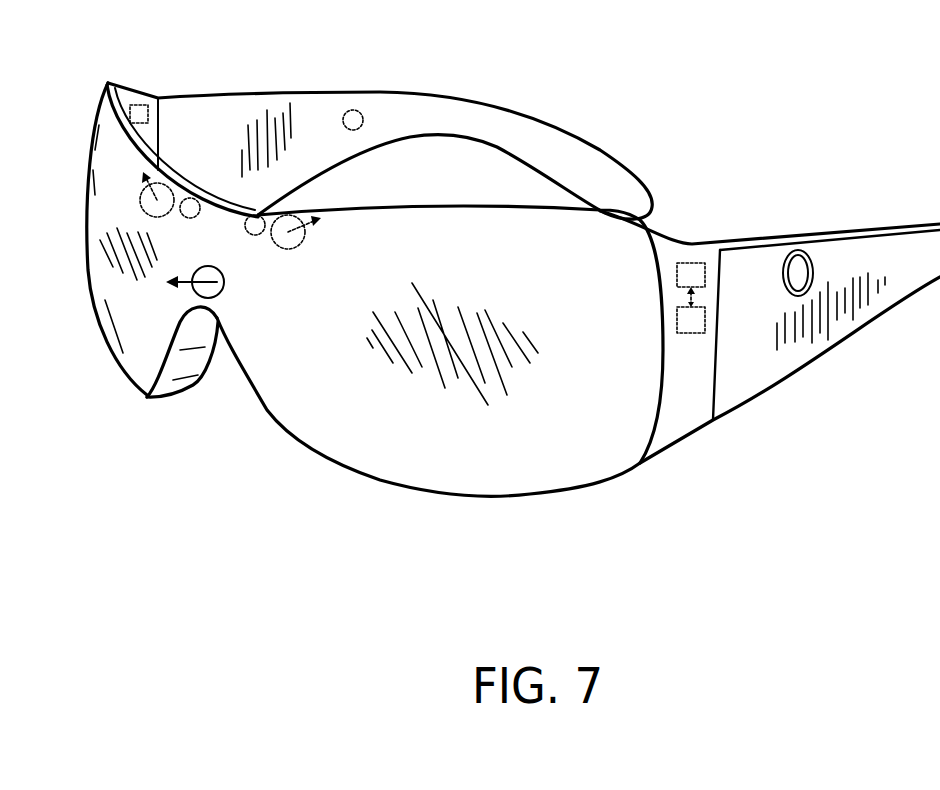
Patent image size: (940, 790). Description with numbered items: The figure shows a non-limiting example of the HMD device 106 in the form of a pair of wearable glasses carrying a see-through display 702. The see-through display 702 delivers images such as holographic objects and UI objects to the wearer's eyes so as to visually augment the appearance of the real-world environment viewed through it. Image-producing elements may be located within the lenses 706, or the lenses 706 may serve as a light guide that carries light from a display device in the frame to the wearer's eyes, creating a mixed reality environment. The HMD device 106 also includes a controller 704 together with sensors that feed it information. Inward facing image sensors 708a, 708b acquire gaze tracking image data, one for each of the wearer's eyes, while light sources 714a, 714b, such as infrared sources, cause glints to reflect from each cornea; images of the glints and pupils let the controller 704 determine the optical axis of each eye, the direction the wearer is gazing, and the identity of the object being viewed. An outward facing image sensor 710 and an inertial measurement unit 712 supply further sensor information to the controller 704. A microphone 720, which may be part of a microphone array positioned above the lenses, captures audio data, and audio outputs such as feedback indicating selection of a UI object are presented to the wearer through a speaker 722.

The HMD device 106 is at (583, 84).
The see-through display 702 is at (320, 425).
The controller 704 is at (691, 262).
The lenses 706 is at (182, 362).
The inward facing image sensor 708a is at (292, 248).
The inward facing image sensor 708b is at (163, 214).
The outward facing image sensor 710 is at (225, 282).
The inertial measurement unit 712 is at (705, 318).
The light source 714a is at (255, 215).
The light source 714b is at (187, 198).
The microphone 720 is at (145, 104).
The speaker 722 is at (355, 110).